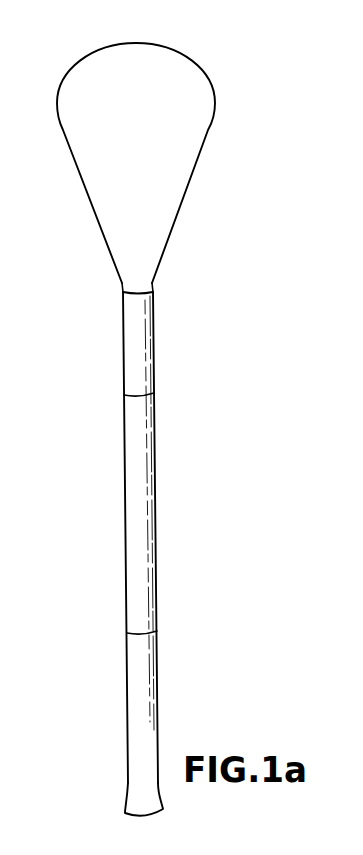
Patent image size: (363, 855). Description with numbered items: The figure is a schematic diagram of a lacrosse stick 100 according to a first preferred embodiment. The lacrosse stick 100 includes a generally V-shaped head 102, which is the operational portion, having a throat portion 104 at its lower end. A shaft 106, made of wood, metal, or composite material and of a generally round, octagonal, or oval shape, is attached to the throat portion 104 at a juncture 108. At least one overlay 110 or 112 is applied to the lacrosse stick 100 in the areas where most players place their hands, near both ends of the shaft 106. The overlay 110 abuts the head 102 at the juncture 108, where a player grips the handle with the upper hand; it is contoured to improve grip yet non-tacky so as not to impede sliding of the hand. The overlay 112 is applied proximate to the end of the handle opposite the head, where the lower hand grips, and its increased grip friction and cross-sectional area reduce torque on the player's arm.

The lacrosse stick 100 is at (113, 505).
The head 102 is at (197, 158).
The throat portion 104 is at (158, 265).
The shaft 106 is at (156, 518).
The juncture 108 is at (153, 292).
The overlay 110 is at (153, 350).
The overlay 112 is at (127, 722).